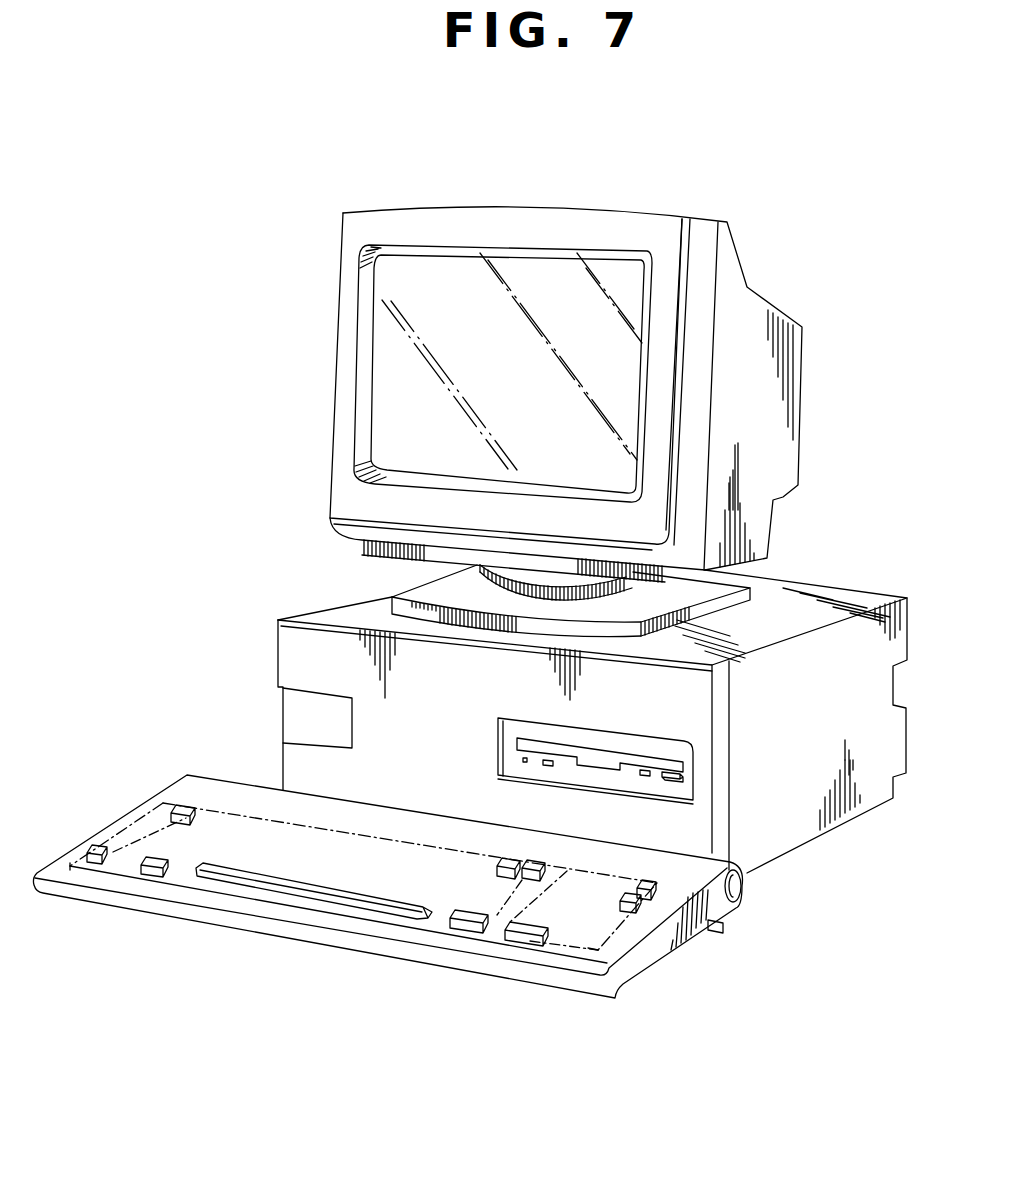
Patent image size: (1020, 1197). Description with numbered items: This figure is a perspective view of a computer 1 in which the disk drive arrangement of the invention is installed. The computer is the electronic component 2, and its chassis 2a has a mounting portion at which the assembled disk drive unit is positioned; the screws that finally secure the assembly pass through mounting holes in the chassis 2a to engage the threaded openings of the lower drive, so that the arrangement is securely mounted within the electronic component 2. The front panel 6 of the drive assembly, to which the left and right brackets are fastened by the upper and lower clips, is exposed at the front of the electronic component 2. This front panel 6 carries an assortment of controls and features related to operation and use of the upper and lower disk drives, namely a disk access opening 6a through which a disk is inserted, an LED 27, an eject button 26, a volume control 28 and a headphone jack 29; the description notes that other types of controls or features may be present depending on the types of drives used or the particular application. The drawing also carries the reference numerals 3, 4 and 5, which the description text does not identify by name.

The information processing apparatus (personal computer) 1 is at (841, 482).
The electronic component 2 is at (772, 835).
The chassis 2a is at (295, 648).
The display unit 3 is at (732, 275).
The keyboard 4 is at (657, 957).
The recess (drive bay opening) 5 is at (686, 742).
The front panel 6 is at (513, 724).
The disk access opening 6a is at (683, 767).
The eject button 26 is at (667, 783).
The LED 27 is at (641, 777).
The volume control 28 is at (545, 766).
The headphone jack 29 is at (521, 761).